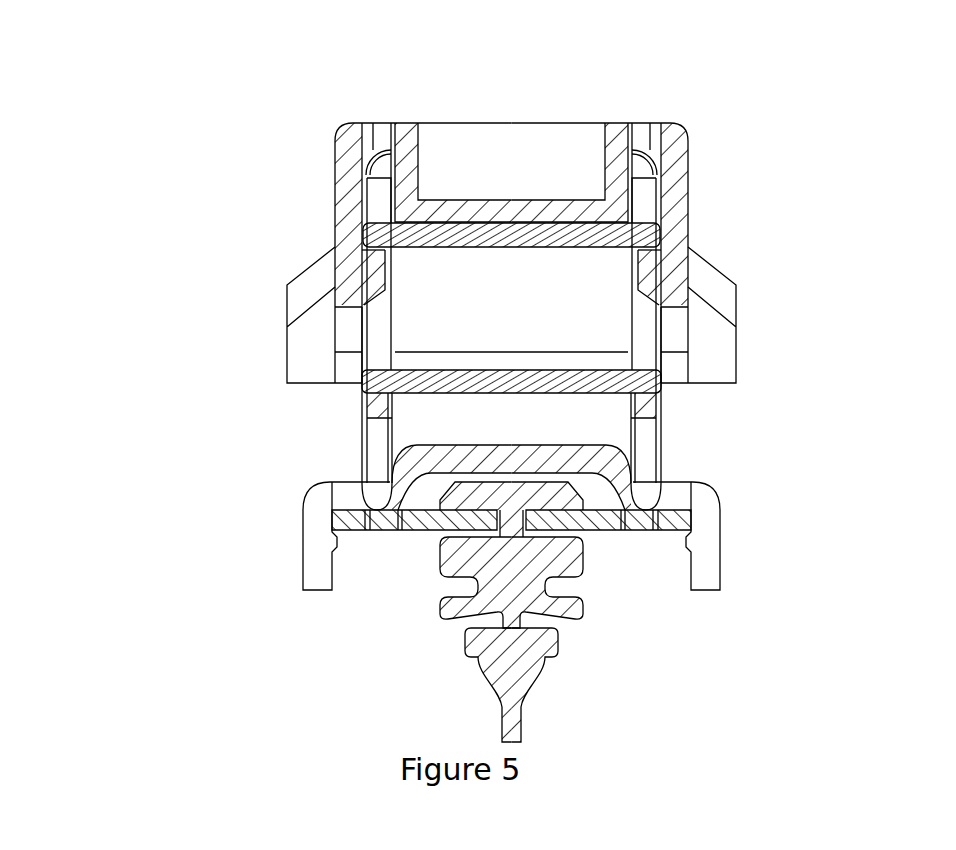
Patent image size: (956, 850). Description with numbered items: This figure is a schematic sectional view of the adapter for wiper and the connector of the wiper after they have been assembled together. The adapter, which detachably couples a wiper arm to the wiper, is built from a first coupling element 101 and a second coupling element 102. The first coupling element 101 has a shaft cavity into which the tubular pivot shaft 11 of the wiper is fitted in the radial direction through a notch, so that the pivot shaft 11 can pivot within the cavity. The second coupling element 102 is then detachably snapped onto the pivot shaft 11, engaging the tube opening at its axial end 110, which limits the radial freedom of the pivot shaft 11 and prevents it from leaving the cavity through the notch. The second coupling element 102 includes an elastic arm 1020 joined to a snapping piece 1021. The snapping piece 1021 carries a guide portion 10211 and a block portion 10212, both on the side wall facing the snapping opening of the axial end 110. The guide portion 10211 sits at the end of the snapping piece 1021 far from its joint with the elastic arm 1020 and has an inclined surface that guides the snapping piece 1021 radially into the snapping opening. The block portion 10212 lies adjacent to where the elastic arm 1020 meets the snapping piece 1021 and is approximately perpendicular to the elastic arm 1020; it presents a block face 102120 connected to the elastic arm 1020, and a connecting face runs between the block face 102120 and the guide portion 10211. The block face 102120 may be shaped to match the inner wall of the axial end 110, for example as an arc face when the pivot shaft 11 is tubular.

The first coupling element 101 is at (465, 205).
The elastic arm 1020 is at (348, 158).
The second coupling element 102 is at (700, 201).
The axial end 110 is at (657, 238).
The block face 102120 is at (375, 243).
The block portion 10212 is at (385, 270).
The guide portion 10211 is at (375, 305).
The snapping piece 1021 is at (150, 220).
The pivot shaft 11 is at (625, 372).